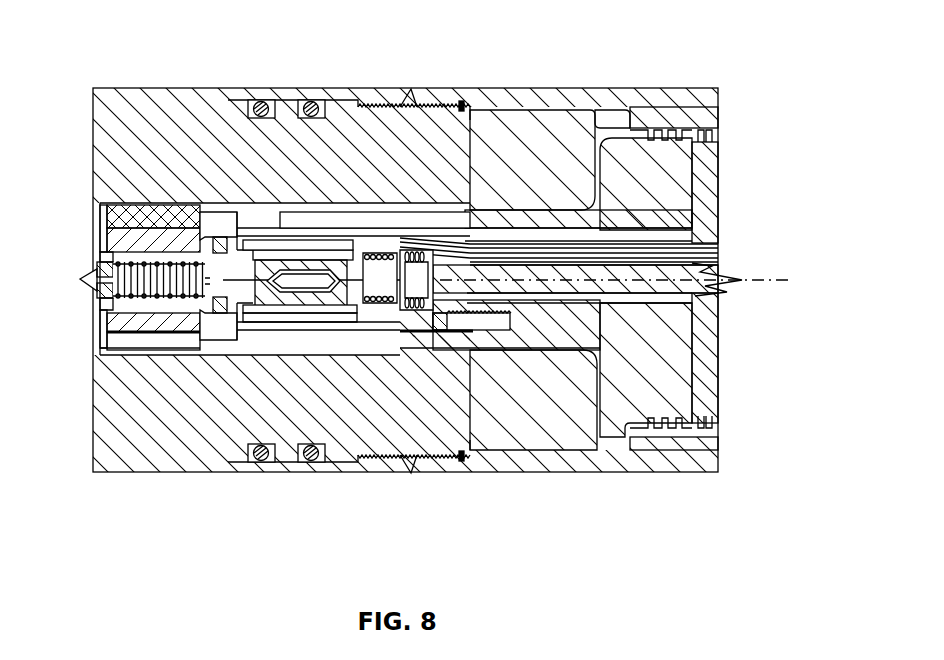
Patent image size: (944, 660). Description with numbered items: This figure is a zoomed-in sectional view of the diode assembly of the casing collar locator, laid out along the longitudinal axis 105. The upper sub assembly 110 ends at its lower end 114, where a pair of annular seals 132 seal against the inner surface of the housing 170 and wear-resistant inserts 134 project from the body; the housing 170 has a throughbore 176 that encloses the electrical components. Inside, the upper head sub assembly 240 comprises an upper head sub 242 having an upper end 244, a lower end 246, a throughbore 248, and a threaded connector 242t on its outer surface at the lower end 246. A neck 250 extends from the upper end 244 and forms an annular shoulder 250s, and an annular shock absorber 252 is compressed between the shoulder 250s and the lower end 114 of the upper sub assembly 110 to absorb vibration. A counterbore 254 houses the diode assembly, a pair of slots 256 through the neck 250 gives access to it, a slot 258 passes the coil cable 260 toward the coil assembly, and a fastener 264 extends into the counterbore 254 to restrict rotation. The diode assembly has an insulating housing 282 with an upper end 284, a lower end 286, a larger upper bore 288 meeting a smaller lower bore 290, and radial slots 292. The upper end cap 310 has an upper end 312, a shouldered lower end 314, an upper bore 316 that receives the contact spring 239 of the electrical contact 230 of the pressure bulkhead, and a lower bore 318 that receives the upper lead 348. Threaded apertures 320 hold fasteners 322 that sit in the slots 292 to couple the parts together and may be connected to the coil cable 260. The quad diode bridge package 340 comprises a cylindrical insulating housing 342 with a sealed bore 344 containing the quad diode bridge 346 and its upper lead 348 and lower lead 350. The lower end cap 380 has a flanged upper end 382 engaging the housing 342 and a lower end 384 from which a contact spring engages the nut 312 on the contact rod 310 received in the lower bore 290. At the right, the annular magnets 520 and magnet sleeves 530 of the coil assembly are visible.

The longitudinal axis 105 is at (767, 280).
The upper sub assembly 110 is at (110, 122).
The lower end 114 is at (493, 117).
The annular seals 132 is at (310, 100).
The inserts 134 is at (398, 107).
The housing 170 is at (350, 100).
The throughbore 176 is at (414, 100).
The electrical contact 230 is at (110, 273).
The contact spring 239 is at (100, 282).
The upper head sub assembly 240 is at (595, 145).
The upper head sub 242 is at (620, 447).
The threaded connector 242t is at (660, 130).
The upper end 244 is at (100, 343).
The lower end 246 is at (697, 395).
The throughbore 248 is at (712, 315).
The neck 250 is at (375, 455).
The annular shoulder 250s is at (608, 130).
The annular shock absorber 252 is at (533, 113).
The counterbore 254 is at (157, 333).
The slots 256 is at (220, 190).
The slot 258 is at (683, 237).
The coil cable 260 is at (712, 249).
The fastener 264 is at (577, 440).
The insulating housing 282 is at (468, 455).
The upper end 284 is at (100, 322).
The lower end 286 is at (547, 453).
The upper bore 288 is at (200, 247).
The lower bore 290 is at (623, 304).
The slots 292 is at (107, 207).
The upper end cap 310 is at (722, 288).
The upper end 312 is at (97, 264).
The lower end 314 is at (293, 330).
The upper bore 316 is at (110, 258).
The lower bore 318 is at (270, 313).
The threaded apertures 320 is at (197, 290).
The fasteners 322 is at (157, 210).
The quad diode bridge package 340 is at (340, 337).
The insulating housing 342 is at (420, 455).
The sealed bore 344 is at (262, 240).
The quad diode bridge 346 is at (287, 240).
The upper lead 348 is at (215, 245).
The lower lead 350 is at (330, 220).
The lower end cap 380 is at (465, 455).
The upper end 382 is at (437, 455).
The lower end 384 is at (380, 237).
The annular magnets 520 is at (705, 170).
The magnet sleeves 530 is at (708, 125).